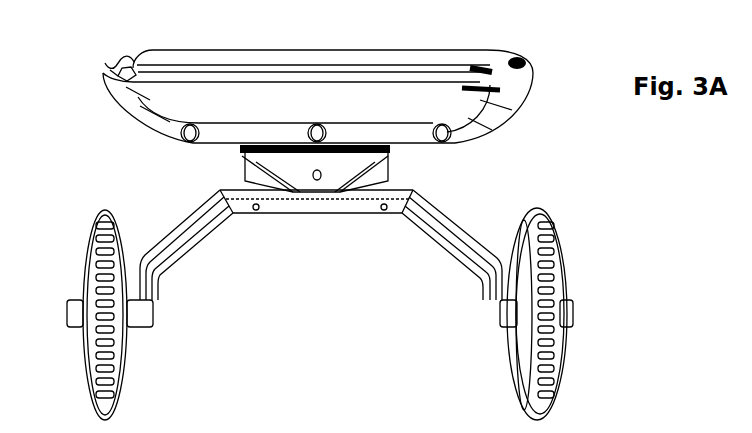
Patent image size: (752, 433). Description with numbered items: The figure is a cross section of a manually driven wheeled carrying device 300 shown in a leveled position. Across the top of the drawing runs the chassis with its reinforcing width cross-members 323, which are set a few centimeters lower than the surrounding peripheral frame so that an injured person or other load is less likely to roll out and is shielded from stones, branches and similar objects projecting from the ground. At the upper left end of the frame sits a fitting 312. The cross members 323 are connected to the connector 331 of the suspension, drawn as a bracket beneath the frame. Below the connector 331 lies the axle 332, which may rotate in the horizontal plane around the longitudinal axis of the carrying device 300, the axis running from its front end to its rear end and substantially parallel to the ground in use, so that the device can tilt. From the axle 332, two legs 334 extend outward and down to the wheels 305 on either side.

The carrying device 300 is at (538, 34).
The handle fitting 312 is at (105, 63).
The width cross-members 323 is at (460, 113).
The connector 331 is at (278, 161).
The axle 332 is at (327, 208).
The leg 334 is at (180, 243).
The wheel 305 is at (122, 375).